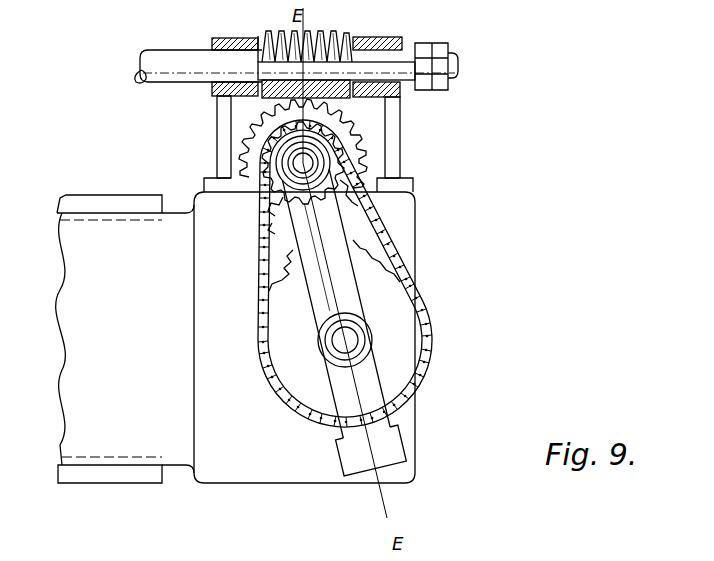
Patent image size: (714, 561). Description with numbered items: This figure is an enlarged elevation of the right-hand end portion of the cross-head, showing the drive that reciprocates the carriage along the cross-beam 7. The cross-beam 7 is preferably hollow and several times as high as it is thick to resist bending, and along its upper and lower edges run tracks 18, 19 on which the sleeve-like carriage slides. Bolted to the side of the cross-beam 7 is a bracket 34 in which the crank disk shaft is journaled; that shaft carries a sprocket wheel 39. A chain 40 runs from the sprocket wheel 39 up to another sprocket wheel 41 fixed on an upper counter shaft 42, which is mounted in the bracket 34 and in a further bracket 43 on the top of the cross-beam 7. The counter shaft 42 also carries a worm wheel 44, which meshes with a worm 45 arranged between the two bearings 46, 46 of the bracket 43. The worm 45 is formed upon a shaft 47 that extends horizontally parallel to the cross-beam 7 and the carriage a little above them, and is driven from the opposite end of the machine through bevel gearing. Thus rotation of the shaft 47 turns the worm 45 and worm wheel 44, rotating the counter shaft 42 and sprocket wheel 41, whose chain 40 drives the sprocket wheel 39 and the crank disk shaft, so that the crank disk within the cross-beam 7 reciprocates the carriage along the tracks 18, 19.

The cross-beam 7 is at (125, 339).
The track 18 is at (118, 207).
The track 19 is at (112, 475).
The bracket 34 is at (358, 457).
The sprocket wheel 39 is at (412, 343).
The chain 40 is at (393, 237).
The sprocket wheel 41 is at (337, 158).
The upper counter shaft 42 is at (283, 178).
The bracket 43 is at (400, 166).
The worm wheel 44 is at (240, 147).
The worm 45 is at (272, 36).
The bearings 46 is at (213, 43).
The shaft 47 is at (150, 73).